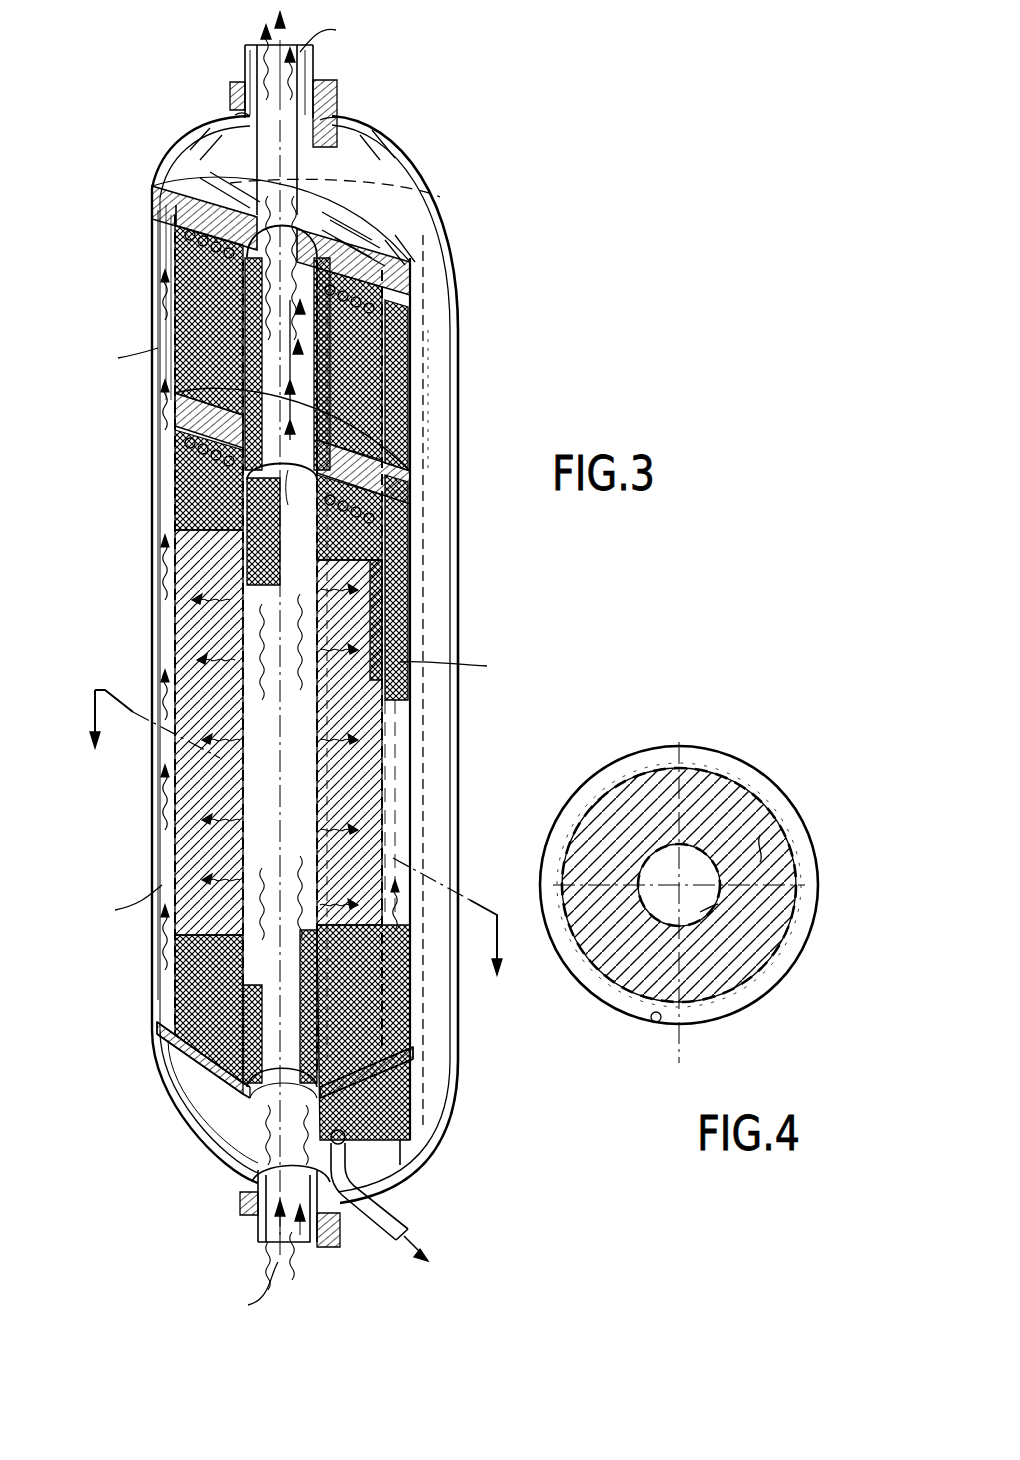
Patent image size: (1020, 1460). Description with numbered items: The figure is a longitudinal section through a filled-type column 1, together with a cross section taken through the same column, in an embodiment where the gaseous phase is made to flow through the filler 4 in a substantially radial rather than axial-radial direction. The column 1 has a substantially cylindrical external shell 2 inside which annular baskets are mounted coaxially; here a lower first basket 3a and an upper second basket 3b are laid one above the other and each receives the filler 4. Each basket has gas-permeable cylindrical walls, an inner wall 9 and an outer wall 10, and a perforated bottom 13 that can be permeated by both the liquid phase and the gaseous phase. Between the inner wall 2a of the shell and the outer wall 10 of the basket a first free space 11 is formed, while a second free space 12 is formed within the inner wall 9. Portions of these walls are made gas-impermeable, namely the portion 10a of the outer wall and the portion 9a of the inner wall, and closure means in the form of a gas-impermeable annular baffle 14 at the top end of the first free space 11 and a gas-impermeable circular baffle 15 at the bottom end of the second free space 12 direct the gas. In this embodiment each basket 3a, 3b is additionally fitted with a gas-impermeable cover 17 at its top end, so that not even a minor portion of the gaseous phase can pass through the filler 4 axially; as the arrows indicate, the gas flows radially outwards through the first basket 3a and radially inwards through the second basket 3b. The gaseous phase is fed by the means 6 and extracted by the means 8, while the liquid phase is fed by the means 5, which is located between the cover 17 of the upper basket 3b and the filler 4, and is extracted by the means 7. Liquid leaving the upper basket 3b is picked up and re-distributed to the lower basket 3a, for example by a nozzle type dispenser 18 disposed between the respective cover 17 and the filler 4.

In FIG. 3, the column 1 is at (502, 183).
In FIG. 3, the external shell 2 is at (458, 325).
In FIG. 4, the external shell 2 is at (760, 1003).
In FIG. 3, the inner wall of the shell 2a is at (158, 596).
In FIG. 4, the inner wall of the shell 2a is at (650, 1018).
In FIG. 3, the first basket 3a is at (400, 812).
In FIG. 4, the first basket 3a is at (762, 835).
In FIG. 3, the second basket 3b is at (405, 365).
In FIG. 3, the filler 4 is at (192, 283).
In FIG. 4, the filler 4 is at (735, 800).
In FIG. 3, the means for feeding a liquid phase 5 is at (195, 178).
In FIG. 3, the means for feeding a gaseous phase 6 is at (314, 1250).
In FIG. 3, the means for extracting the liquid phase 7 is at (372, 1232).
In FIG. 3, the means for extracting the gaseous phase 8 is at (242, 76).
In FIG. 3, the inner wall of the basket 9 is at (245, 682).
In FIG. 4, the inner wall of the basket 9 is at (720, 862).
In FIG. 3, the gas-impermeable portion of the inner wall 9a is at (178, 455).
In FIG. 3, the outer wall of the basket 10 is at (175, 785).
In FIG. 4, the outer wall of the basket 10 is at (706, 770).
In FIG. 3, the gas-impermeable portion of the outer wall 10a is at (425, 505).
In FIG. 3, the first free space 11 is at (160, 648).
In FIG. 4, the first free space 11 is at (623, 770).
In FIG. 3, the second free space 12 is at (300, 725).
In FIG. 4, the second free space 12 is at (718, 904).
In FIG. 3, the perforated bottom 13 is at (215, 1065).
In FIG. 3, the annular baffle 14 is at (176, 208).
In FIG. 3, the circular baffle 15 is at (293, 504).
In FIG. 3, the gas-impermeable cover 17 is at (372, 262).
In FIG. 3, the nozzle type dispenser 18 is at (412, 548).